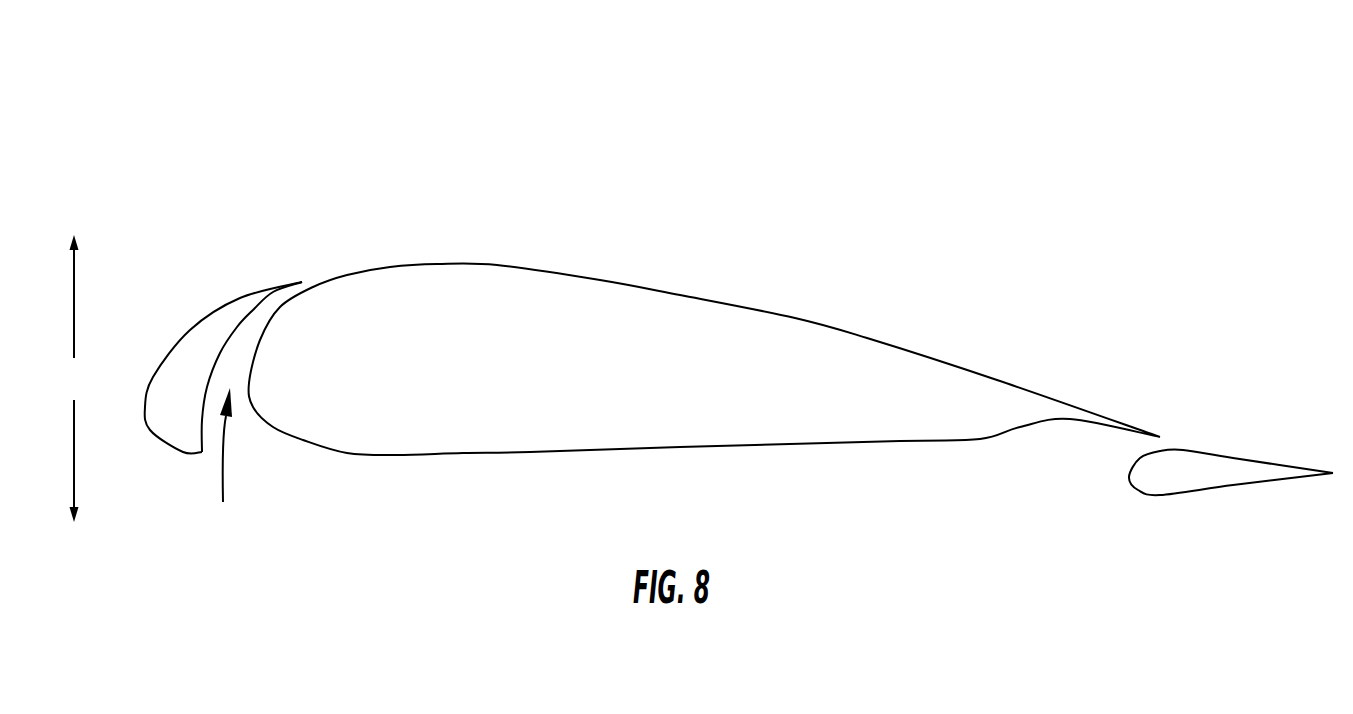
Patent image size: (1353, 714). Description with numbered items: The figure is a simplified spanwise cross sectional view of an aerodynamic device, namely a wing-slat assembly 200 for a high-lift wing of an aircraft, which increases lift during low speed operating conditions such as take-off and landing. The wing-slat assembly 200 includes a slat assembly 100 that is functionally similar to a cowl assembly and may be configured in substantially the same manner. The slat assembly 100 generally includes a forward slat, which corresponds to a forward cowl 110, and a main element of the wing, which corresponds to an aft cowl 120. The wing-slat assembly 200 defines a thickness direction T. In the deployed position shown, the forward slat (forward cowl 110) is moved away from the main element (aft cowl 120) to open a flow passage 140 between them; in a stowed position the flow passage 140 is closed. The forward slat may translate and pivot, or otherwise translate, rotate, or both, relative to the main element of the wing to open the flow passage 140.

The slat assembly 100 is at (433, 182).
The forward cowl 110 is at (207, 317).
The aft cowl 120 is at (795, 318).
The flow passage 140 is at (222, 467).
The wing-slat assembly 200 is at (825, 98).
The thickness direction T is at (74, 378).